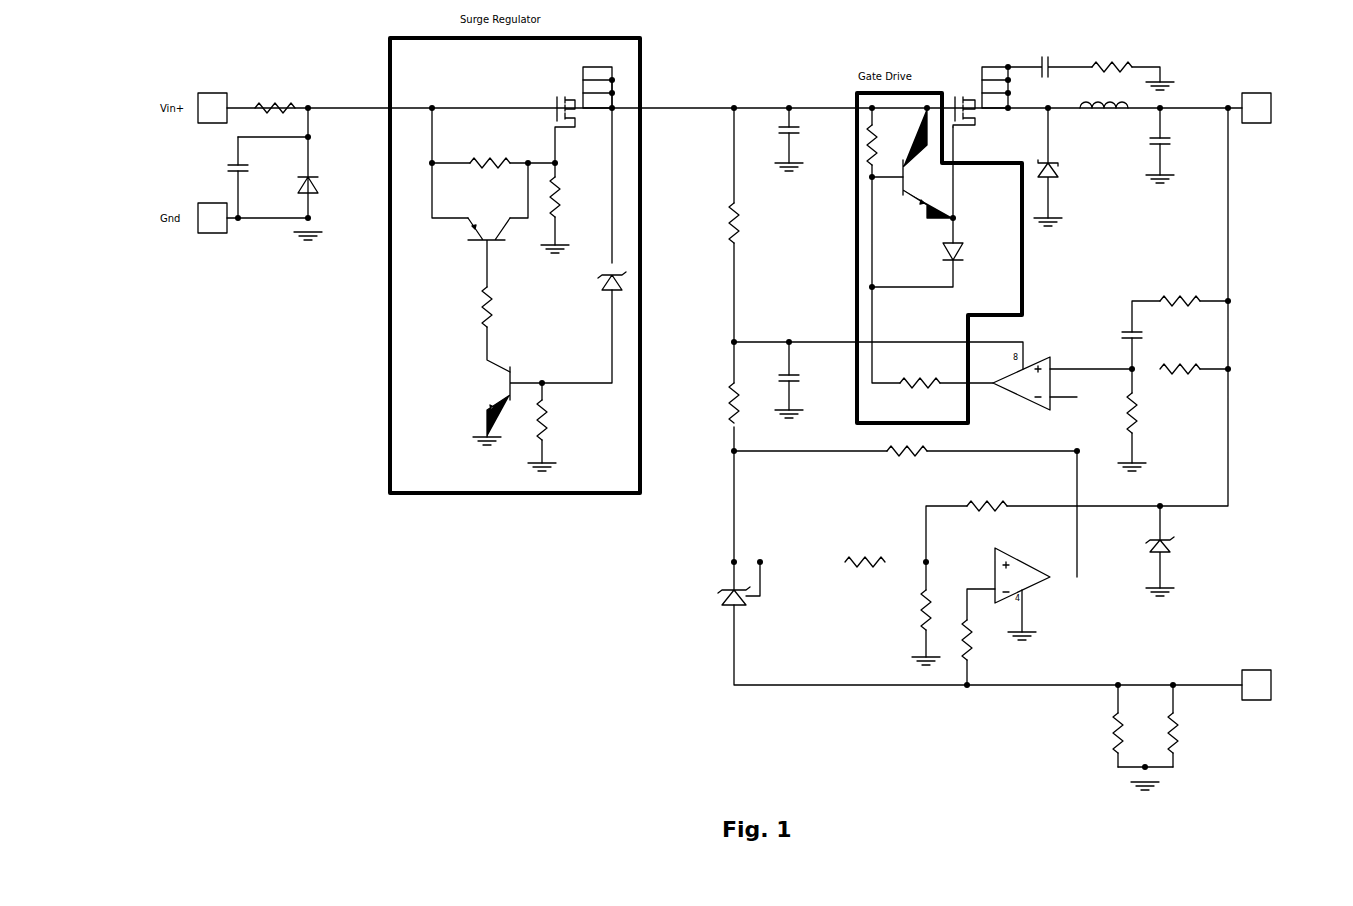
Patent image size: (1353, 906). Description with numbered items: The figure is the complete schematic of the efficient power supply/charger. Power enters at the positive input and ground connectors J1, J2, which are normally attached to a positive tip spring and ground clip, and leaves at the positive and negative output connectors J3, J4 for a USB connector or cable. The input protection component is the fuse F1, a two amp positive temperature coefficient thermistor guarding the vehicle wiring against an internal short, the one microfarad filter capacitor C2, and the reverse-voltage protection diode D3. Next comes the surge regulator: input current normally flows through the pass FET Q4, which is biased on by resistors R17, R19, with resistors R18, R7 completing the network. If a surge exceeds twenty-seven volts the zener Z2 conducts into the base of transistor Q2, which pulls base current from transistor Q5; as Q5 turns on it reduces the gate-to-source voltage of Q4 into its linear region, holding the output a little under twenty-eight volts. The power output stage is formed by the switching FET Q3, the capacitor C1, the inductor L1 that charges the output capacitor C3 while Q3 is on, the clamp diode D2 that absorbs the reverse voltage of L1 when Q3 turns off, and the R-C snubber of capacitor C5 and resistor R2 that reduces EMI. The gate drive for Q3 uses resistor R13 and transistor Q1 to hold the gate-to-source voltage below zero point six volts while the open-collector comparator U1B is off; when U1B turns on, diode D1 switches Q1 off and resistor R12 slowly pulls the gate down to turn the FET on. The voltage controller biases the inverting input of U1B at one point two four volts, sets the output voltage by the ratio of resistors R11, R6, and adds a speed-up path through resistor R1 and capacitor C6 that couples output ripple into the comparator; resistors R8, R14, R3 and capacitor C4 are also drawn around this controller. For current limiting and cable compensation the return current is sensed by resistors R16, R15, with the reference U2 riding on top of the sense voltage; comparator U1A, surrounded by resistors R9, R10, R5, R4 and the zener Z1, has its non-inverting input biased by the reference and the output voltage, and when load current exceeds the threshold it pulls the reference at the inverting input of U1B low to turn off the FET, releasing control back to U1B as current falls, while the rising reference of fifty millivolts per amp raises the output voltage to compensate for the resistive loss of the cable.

The input connector Vin+ J1 is at (212, 108).
The input connector Gnd J2 is at (212, 218).
The output connector Vout+ J3 is at (1279, 108).
The output connector Vout- J4 is at (1276, 685).
The fuse F1 is at (274, 108).
The capacitor C2 is at (252, 177).
The diode D3 is at (321, 187).
The series pass FET Q4 is at (564, 110).
The bias resistor R17 is at (490, 169).
The bias resistor R19 is at (564, 208).
The transistor Q5 is at (457, 252).
The resistor R18 is at (480, 329).
The zener diode Z2 is at (578, 298).
The transistor Q2 is at (481, 396).
The resistor R7 is at (551, 427).
The capacitor C1 is at (802, 139).
The resistor 1K R8 is at (748, 222).
The resistor 3K R14 is at (718, 406).
The capacitor 100n C4 is at (802, 380).
The resistor 1K R3 is at (907, 458).
The resistor R13 is at (886, 136).
The transistor Q1 is at (950, 163).
The diode D1 is at (931, 264).
The resistor R12 is at (919, 388).
The comparator U1B is at (1021, 389).
The speed-up capacitor C6 is at (1117, 331).
The speed-up resistor R1 is at (1180, 308).
The feedback resistor R11 is at (1180, 376).
The feedback resistor R6 is at (1121, 420).
The switching FET Q3 is at (988, 78).
The snubber capacitor C5 is at (1050, 71).
The snubber resistor R2 is at (1133, 69).
The inductor L1 is at (1104, 114).
The clamp diode D2 is at (1062, 167).
The output capacitor C3 is at (1173, 145).
The voltage reference U2 is at (709, 597).
The resistor 59K R9 is at (865, 568).
The resistor 59K R10 is at (987, 511).
The resistor 1K R5 is at (915, 613).
The comparator U1A is at (1031, 582).
The resistor 1K R4 is at (981, 650).
The current sensing resistor R16 is at (1131, 726).
The current sensing resistor R15 is at (1186, 726).
The zener diode BZX84C6V8 Z1 is at (1189, 551).